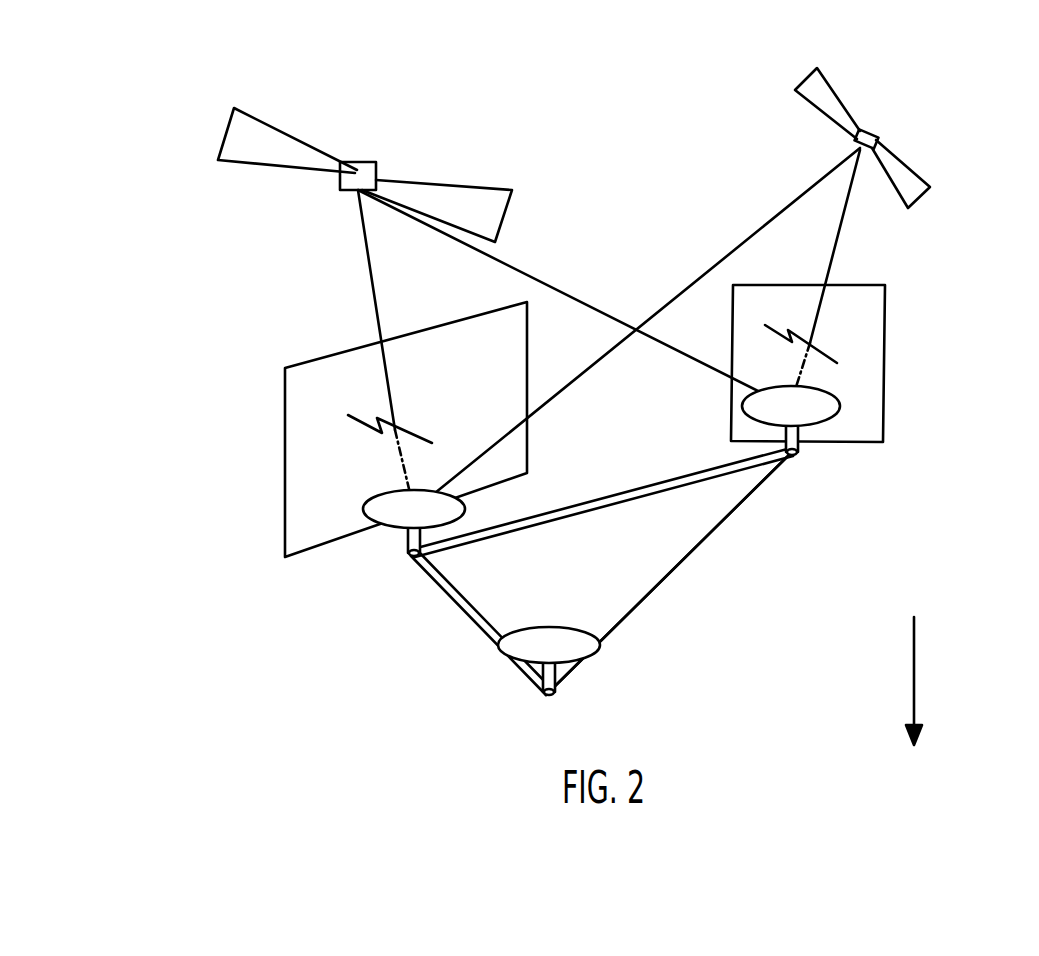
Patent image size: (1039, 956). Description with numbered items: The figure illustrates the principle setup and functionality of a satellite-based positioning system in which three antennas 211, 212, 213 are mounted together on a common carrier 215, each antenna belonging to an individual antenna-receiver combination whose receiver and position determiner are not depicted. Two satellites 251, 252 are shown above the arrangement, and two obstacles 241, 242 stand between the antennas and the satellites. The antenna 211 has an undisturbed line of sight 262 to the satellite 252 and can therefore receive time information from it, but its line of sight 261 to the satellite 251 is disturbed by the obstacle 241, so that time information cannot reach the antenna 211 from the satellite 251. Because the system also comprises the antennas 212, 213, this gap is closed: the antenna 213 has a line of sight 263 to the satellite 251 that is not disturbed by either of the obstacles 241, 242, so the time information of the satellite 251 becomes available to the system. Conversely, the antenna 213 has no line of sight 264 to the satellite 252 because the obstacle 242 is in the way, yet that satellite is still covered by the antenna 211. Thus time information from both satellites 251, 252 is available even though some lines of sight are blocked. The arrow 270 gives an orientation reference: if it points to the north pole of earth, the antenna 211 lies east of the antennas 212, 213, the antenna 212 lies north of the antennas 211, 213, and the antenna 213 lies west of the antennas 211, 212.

The antenna 211 is at (392, 530).
The antenna 212 is at (558, 627).
The antenna 213 is at (843, 405).
The carrier 215 is at (695, 557).
The obstacle 241 is at (285, 445).
The obstacle 242 is at (886, 367).
The satellite 251 is at (372, 162).
The satellite 252 is at (877, 133).
The line of sight 261 is at (370, 267).
The line of sight 262 is at (740, 243).
The line of sight 263 is at (545, 280).
The line of sight 264 is at (836, 250).
The arrow 270 is at (916, 683).